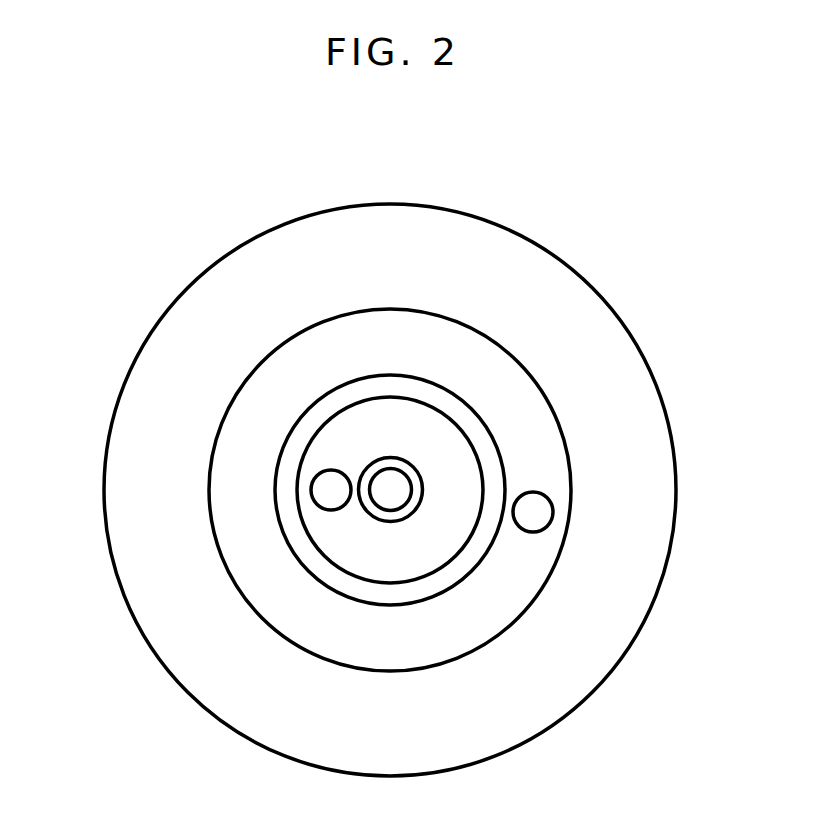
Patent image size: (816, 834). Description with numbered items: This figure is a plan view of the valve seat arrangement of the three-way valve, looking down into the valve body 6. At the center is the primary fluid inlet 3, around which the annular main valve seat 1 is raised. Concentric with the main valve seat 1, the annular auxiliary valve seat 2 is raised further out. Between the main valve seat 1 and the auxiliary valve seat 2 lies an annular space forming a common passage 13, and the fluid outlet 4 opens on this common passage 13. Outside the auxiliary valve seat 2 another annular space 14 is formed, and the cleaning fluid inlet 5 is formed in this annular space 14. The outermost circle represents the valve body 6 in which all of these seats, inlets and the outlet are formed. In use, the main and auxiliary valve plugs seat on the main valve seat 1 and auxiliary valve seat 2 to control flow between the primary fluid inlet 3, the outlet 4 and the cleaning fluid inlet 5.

The main valve seat 1 is at (410, 512).
The auxiliary valve seat 2 is at (440, 397).
The primary fluid inlet 3 is at (387, 492).
The outlet 4 is at (311, 490).
The cleaning fluid inlet 5 is at (540, 510).
The valve body 6 is at (657, 493).
The common passage 13 is at (373, 420).
The annular space 14 is at (230, 432).